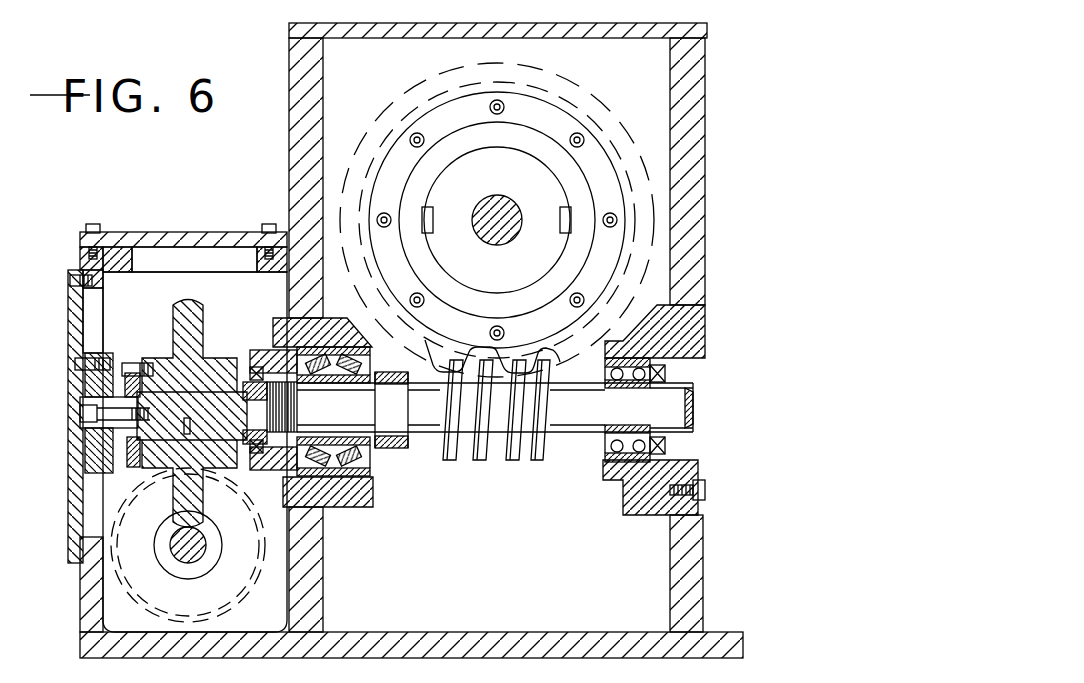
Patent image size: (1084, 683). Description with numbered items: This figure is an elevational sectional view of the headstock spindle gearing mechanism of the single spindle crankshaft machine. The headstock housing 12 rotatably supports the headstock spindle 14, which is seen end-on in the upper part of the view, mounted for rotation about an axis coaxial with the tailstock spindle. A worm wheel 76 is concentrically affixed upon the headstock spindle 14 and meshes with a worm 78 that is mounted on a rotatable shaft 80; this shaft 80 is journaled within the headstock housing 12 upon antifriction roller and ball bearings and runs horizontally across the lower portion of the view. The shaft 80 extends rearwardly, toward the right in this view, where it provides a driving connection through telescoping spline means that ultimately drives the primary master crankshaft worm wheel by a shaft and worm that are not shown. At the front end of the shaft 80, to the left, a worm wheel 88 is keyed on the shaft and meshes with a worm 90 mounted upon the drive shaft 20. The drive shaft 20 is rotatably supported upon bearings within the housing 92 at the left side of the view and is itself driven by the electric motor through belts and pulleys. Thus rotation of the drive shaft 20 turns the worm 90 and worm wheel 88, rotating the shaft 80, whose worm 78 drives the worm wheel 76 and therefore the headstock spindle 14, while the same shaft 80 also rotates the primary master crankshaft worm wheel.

The headstock housing 12 is at (712, 211).
The headstock spindle 14 is at (447, 169).
The drive shaft 20 is at (186, 566).
The worm wheel 76 is at (443, 362).
The worm 78 is at (515, 461).
The rotatable shaft 80 is at (592, 411).
The worm wheel 88 is at (200, 331).
The worm 90 is at (213, 542).
The housing 92 is at (68, 321).